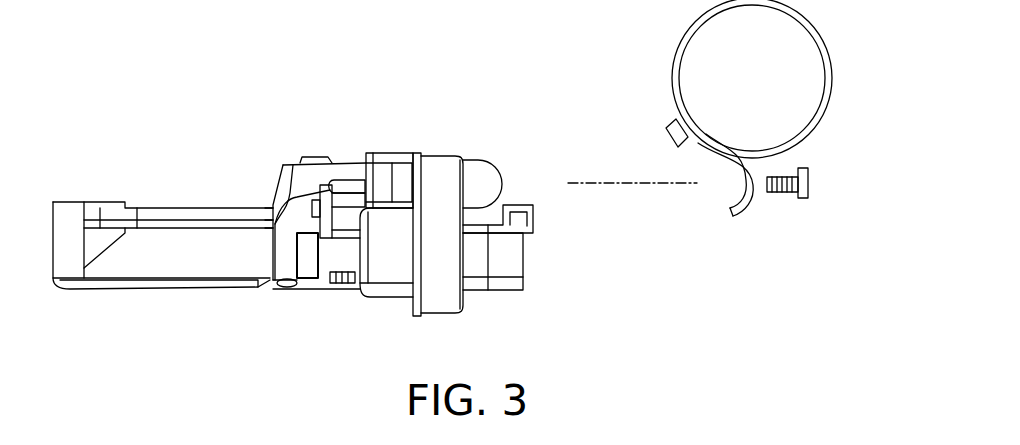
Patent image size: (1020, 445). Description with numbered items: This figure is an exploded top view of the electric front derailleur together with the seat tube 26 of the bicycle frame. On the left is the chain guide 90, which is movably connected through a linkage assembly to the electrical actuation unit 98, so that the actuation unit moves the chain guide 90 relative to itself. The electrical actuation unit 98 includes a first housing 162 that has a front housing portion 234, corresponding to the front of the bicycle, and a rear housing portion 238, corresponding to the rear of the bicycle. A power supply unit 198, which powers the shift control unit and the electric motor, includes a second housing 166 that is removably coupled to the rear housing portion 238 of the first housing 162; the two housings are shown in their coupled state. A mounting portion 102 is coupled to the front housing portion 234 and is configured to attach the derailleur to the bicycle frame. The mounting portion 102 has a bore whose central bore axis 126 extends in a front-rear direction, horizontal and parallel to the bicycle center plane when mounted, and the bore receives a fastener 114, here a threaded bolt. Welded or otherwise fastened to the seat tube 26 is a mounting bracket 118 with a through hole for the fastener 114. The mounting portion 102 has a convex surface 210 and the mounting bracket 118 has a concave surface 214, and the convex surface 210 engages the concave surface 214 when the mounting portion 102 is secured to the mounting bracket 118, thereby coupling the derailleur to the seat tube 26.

The seat tube 26 is at (828, 56).
The chain guide 90 is at (212, 210).
The electrical actuation unit 98 is at (352, 148).
The mounting portion 102 is at (480, 165).
The fastener 114 is at (822, 200).
The mounting bracket 118 is at (672, 118).
The central bore axis 126 is at (645, 183).
The first housing 162 is at (440, 155).
The second housing 166 is at (388, 293).
The power supply unit 198 is at (360, 290).
The convex surface 210 is at (505, 195).
The concave surface 214 is at (740, 172).
The front housing portion 234 is at (467, 303).
The rear housing portion 238 is at (412, 311).